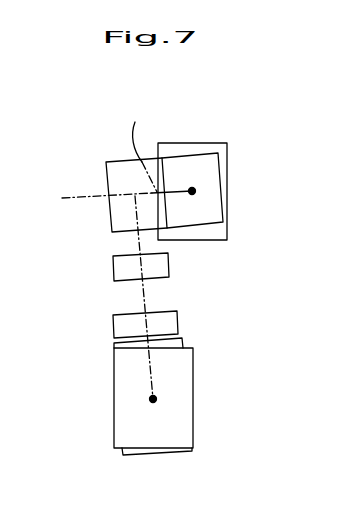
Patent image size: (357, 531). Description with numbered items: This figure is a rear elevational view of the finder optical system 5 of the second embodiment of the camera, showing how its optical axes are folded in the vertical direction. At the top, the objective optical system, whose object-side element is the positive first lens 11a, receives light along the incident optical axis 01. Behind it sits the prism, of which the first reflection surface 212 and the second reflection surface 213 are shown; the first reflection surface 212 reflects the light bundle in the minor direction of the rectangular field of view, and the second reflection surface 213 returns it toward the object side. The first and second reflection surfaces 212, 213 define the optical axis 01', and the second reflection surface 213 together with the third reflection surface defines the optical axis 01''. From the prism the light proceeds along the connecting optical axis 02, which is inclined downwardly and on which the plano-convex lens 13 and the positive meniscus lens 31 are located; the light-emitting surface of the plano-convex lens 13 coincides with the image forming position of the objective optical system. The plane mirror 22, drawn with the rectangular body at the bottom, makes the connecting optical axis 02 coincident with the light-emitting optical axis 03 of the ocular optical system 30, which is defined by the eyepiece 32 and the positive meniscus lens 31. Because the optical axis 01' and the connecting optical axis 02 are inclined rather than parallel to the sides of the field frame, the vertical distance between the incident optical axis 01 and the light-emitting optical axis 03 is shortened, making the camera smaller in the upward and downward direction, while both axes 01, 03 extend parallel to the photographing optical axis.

The finder optical system 5 is at (196, 130).
The positive first lens 11a is at (224, 148).
The first reflection surface 212 is at (207, 171).
The second reflection surface 213 is at (114, 173).
The incident optical axis 01 is at (209, 203).
The optical axis 01' is at (139, 145).
The optical axis 01'' is at (88, 193).
The plano-convex lens 13 is at (122, 264).
The connecting optical axis 02 is at (143, 295).
The ocular optical system 30 is at (198, 377).
The positive meniscus lens 31 is at (178, 330).
The eyepiece 32 is at (174, 396).
The plane mirror 22 is at (124, 455).
The light-emitting optical axis 03 is at (153, 399).